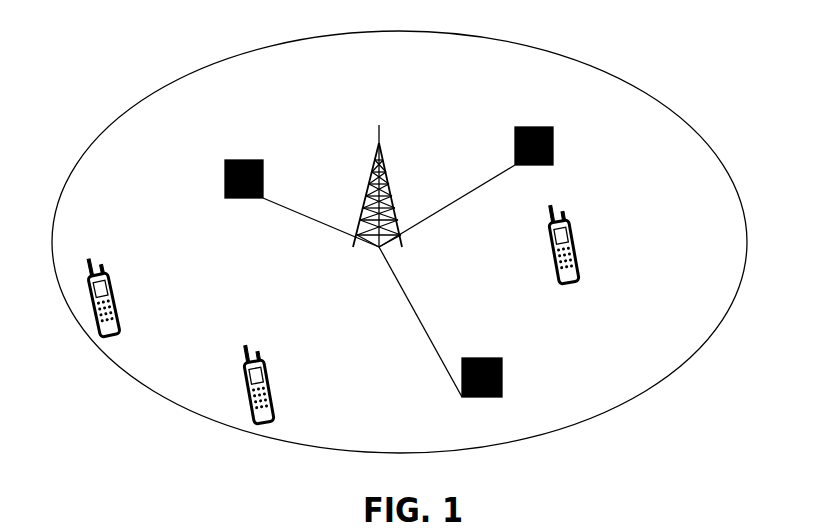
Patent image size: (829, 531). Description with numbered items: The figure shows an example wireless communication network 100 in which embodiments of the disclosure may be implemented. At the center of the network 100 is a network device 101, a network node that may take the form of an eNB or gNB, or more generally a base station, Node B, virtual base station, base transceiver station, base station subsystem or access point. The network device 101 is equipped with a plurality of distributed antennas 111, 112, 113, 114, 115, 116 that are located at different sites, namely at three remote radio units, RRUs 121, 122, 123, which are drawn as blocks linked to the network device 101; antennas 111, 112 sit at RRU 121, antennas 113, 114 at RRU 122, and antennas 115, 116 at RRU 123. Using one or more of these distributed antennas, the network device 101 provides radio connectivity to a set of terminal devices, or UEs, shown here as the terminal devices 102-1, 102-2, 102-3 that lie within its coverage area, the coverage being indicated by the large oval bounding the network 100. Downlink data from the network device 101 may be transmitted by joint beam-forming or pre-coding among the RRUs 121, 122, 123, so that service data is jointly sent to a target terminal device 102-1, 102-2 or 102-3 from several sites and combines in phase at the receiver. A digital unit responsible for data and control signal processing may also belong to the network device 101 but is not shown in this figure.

The wireless communication network 100 is at (243, 50).
The network device 101 is at (397, 177).
The terminal device 102-1 is at (575, 284).
The terminal device 102-2 is at (275, 402).
The terminal device 102-3 is at (115, 312).
The antenna 111 is at (228, 160).
The antenna 112 is at (260, 160).
The antenna 113 is at (467, 358).
The antenna 114 is at (488, 358).
The antenna 115 is at (525, 127).
The antenna 116 is at (547, 127).
The RRU 121 is at (245, 210).
The RRU 122 is at (490, 408).
The RRU 123 is at (558, 164).